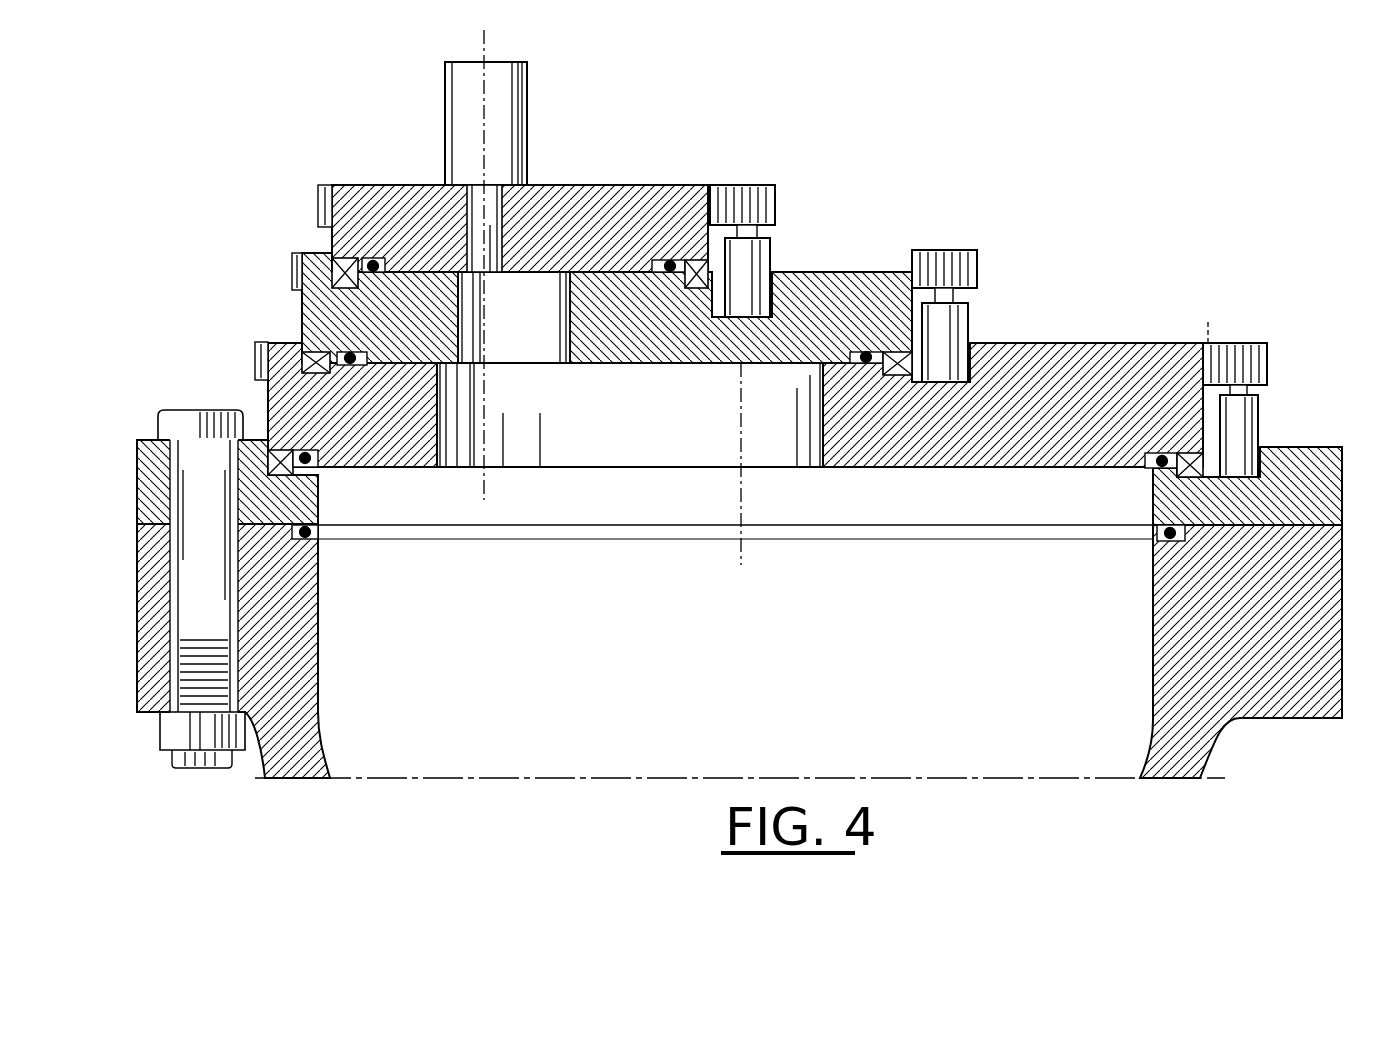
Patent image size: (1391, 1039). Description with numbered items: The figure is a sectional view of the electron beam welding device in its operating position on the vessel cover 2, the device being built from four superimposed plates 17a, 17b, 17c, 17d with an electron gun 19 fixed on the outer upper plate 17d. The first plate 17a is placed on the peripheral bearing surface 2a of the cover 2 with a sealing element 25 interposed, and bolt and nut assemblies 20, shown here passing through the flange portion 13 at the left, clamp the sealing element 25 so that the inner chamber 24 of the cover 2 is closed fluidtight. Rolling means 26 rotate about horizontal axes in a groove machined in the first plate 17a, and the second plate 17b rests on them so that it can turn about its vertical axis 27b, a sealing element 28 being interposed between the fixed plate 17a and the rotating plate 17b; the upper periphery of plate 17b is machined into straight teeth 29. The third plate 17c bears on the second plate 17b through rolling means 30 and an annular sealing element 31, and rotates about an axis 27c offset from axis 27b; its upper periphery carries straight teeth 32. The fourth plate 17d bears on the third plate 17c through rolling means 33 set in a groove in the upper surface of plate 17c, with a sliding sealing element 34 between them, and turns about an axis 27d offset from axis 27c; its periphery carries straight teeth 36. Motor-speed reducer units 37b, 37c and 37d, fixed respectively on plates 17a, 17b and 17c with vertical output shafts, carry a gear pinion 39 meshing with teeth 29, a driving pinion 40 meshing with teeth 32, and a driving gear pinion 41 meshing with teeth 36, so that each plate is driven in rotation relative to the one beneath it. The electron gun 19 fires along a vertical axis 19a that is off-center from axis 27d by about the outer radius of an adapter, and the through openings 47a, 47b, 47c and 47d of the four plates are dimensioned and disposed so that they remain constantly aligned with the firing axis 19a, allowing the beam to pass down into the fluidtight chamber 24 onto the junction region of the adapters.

The cover 2 is at (1163, 686).
The peripheral bearing surface 2a is at (1305, 527).
The clamping flange 13 is at (243, 603).
The first plate 17a is at (1340, 415).
The second plate 17b is at (1090, 348).
The third plate 17c is at (885, 262).
The fourth plate 17d is at (642, 160).
The electron gun 19 is at (512, 104).
The axis 19a is at (487, 102).
The bolt and nut assemblies 20 is at (196, 794).
The inner chamber 24 is at (740, 679).
The sealing element 25 is at (1162, 545).
The rolling means 26 is at (1180, 478).
The vertical axis 27b is at (741, 562).
The axis of rotation 27c is at (607, 366).
The axis of rotation 27d is at (503, 330).
The sealing element 28 is at (1150, 463).
The straight teeth 29 is at (260, 355).
The rolling means 30 is at (262, 360).
The annular sealing element 31 is at (335, 352).
The straight teeth 32 is at (296, 282).
The rolling means 33 is at (330, 252).
The sliding sealing element 34 is at (373, 258).
The straight teeth 36 is at (325, 185).
The motor-speed reducer unit 37b is at (1262, 402).
The motor-speed reducer unit 37c is at (965, 318).
The motor-speed reducer unit 37d is at (765, 245).
The gear pinion 39 is at (1232, 348).
The driving pinion 40 is at (945, 255).
The driving gear pinion 41 is at (760, 185).
The through opening 47a is at (985, 512).
The through opening 47b is at (717, 452).
The through opening 47c is at (497, 355).
The through opening 47d is at (493, 182).